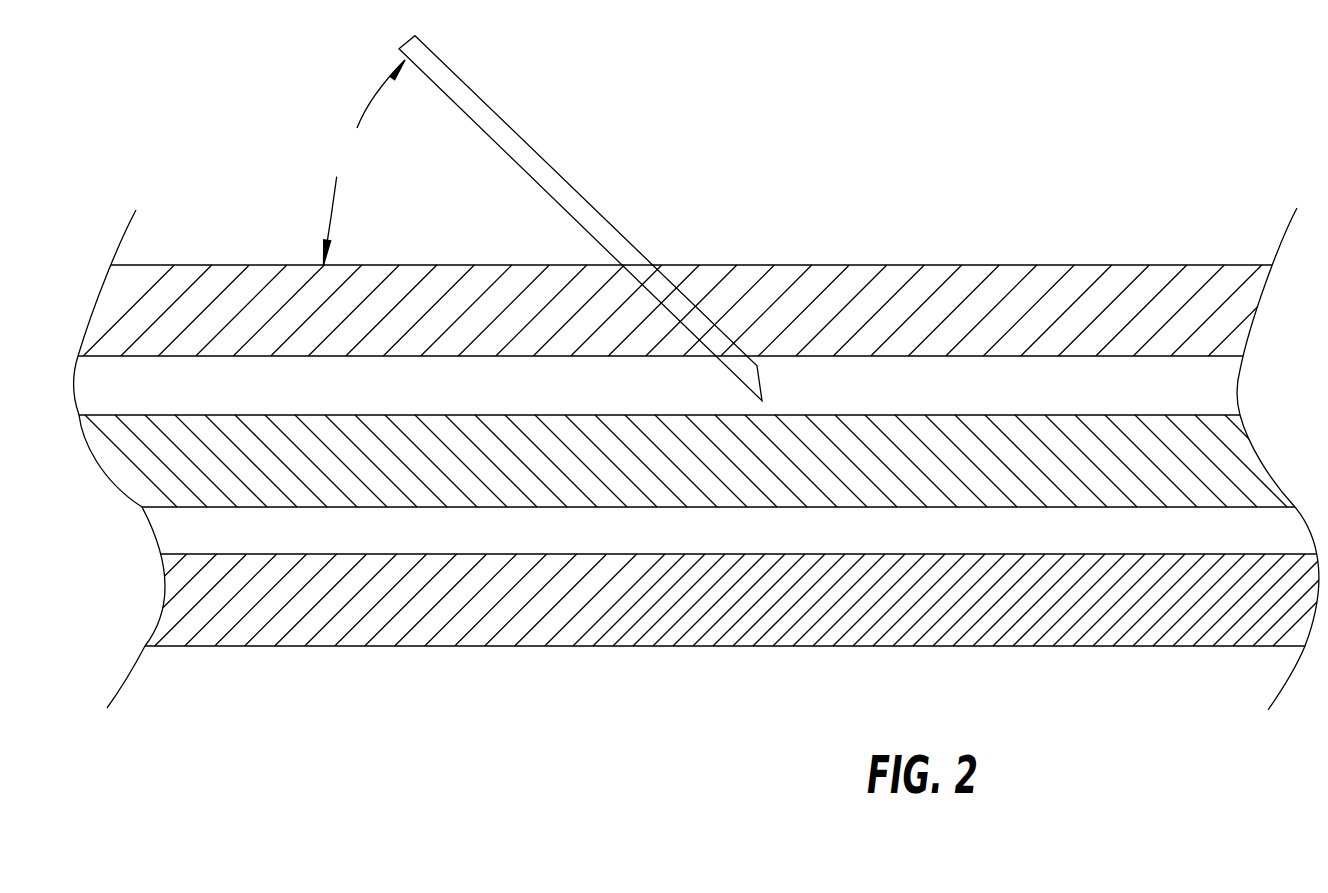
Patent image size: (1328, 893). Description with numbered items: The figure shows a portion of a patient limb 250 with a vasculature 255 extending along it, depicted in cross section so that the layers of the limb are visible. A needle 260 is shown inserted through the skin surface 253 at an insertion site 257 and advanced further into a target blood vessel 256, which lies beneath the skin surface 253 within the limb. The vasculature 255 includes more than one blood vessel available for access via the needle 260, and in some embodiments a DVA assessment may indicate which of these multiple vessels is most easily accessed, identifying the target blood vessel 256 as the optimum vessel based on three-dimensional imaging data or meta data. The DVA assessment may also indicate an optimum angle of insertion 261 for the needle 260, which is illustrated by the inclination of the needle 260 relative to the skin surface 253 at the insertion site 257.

The patient limb 250 is at (288, 647).
The skin surface 253 is at (864, 265).
The vasculature 255 is at (603, 588).
The target blood vessel 256 is at (1046, 390).
The insertion site 257 is at (659, 248).
The needle 260 is at (496, 117).
The angle of insertion 261 is at (365, 162).